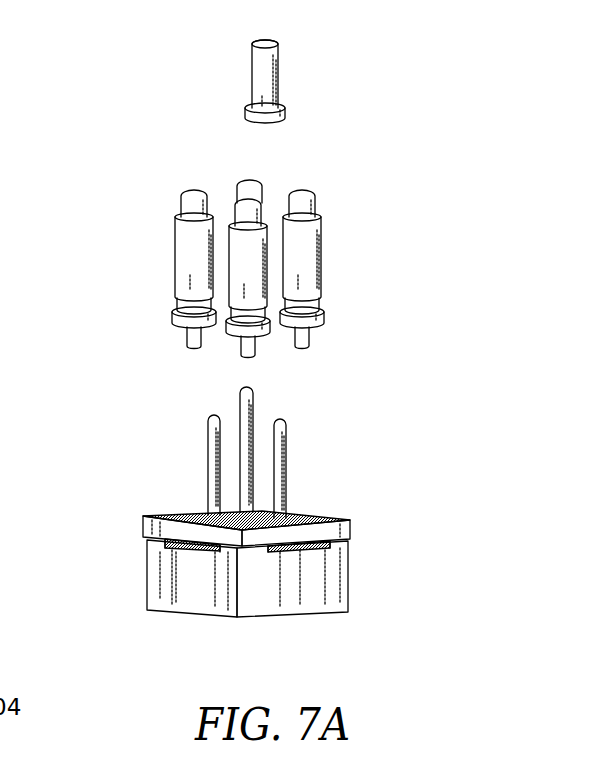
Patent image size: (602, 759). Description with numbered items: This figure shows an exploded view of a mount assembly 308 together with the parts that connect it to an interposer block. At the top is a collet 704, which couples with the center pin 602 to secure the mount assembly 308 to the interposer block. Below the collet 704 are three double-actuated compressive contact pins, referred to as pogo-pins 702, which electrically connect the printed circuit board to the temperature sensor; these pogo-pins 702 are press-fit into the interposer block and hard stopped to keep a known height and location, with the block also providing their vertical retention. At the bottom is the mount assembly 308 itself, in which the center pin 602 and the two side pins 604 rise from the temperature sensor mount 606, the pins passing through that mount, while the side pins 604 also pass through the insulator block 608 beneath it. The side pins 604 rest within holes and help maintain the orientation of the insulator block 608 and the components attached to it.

The collet 704 is at (280, 83).
The pogo-pins 702 is at (140, 170).
The mount assembly 308 is at (205, 493).
The center pin 602 is at (254, 415).
The side pins 604 is at (207, 490).
The temperature sensor mount 606 is at (352, 533).
The insulator block 608 is at (350, 597).